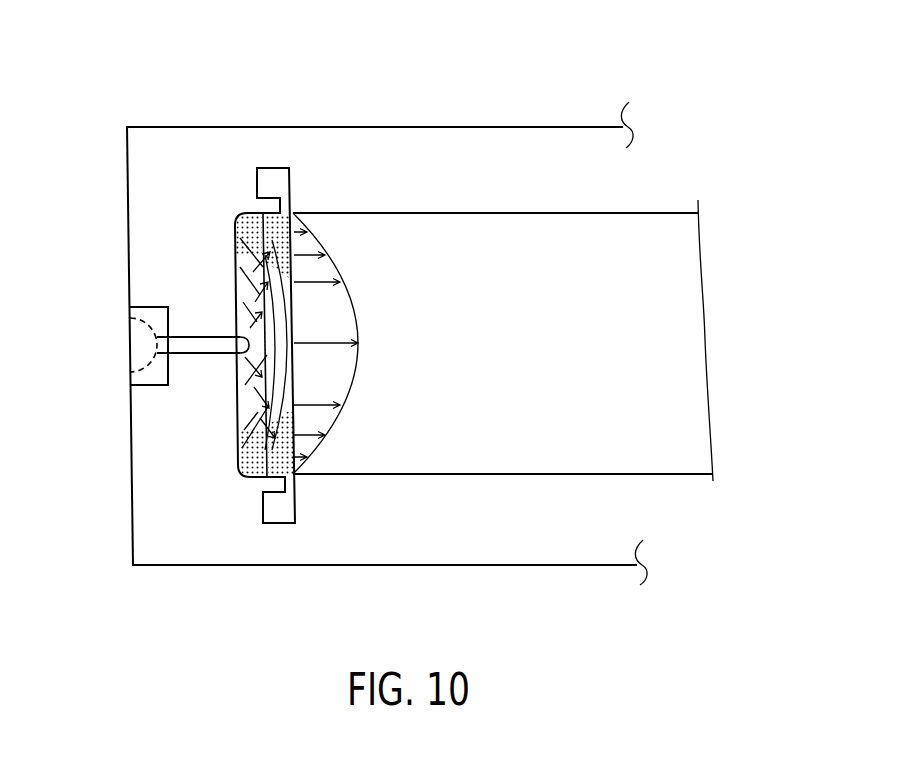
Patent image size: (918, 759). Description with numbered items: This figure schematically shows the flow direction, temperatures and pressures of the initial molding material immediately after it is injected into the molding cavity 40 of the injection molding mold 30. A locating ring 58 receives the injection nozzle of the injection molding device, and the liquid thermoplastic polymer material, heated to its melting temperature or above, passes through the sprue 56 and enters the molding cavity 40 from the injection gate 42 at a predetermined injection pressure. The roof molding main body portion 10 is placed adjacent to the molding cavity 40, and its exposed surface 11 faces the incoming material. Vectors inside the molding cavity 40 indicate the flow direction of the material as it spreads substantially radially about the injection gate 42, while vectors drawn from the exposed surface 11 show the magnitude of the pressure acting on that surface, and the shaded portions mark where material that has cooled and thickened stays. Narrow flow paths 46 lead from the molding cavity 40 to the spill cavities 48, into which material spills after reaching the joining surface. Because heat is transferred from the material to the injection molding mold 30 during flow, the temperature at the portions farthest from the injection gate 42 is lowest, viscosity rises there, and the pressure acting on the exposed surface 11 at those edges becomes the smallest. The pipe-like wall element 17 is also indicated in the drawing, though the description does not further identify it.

The injection molding mold 30 is at (574, 101).
The roof molding main body portion 10 is at (662, 205).
The pipe wall 17 is at (665, 477).
The exposed surface 11 is at (291, 418).
The molding cavity 40 is at (241, 414).
The spill cavity 48 is at (275, 178).
The narrow flow path 46 is at (286, 207).
The locating ring 58 is at (157, 313).
The sprue 56 is at (203, 343).
The injection gate 42 is at (240, 363).